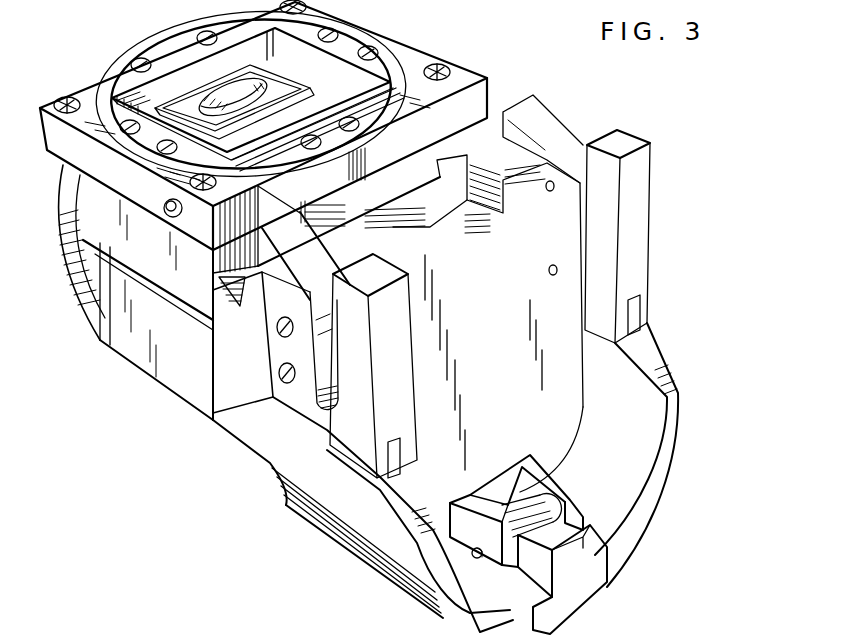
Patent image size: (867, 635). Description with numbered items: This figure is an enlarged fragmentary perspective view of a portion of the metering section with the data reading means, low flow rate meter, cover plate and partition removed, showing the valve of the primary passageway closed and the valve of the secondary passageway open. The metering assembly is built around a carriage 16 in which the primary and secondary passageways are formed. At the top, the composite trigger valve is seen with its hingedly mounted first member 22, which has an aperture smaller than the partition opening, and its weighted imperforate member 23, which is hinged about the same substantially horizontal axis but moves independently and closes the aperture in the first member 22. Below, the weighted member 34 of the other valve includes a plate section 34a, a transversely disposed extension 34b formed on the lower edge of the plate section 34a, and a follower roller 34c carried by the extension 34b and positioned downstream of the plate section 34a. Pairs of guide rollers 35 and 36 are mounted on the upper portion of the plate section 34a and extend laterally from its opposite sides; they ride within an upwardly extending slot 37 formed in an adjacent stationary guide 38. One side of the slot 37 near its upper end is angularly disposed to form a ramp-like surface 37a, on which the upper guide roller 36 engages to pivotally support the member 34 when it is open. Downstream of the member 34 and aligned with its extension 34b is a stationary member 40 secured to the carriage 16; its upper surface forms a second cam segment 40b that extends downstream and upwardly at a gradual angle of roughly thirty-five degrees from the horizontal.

The carriage 16 is at (160, 358).
The first member 22 is at (308, 83).
The weighted imperforate member 23 is at (316, 112).
The weighted member 34 is at (557, 320).
The plate section 34a is at (512, 341).
The transversely disposed extension 34b is at (557, 485).
The follower roller 34c is at (560, 515).
The guide rollers 35 is at (318, 360).
The guide rollers 36 is at (315, 334).
The slot 37 is at (328, 400).
The ramp-like surface 37a is at (538, 124).
The stationary guide 38 is at (640, 212).
The stationary member 40 is at (567, 590).
The second cam segment 40b is at (555, 548).